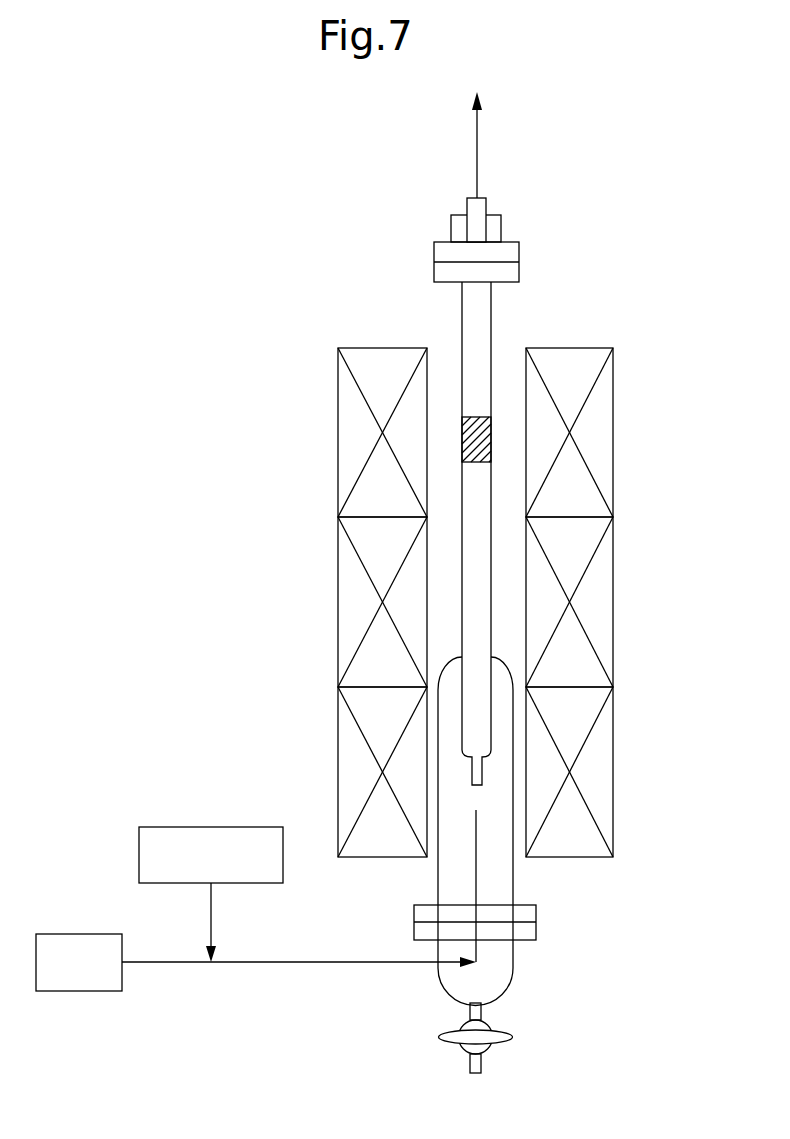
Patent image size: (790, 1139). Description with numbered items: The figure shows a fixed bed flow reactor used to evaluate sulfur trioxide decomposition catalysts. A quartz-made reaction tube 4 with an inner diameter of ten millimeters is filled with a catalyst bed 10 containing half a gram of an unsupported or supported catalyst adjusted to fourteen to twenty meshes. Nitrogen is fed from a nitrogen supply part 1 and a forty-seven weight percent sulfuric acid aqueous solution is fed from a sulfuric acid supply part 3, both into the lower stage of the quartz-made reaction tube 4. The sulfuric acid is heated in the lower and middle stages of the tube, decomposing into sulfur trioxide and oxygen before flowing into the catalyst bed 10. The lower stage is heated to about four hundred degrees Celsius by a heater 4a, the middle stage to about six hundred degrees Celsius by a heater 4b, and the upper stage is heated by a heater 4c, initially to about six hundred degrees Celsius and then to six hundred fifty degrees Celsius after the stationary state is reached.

The nitrogen supply part 1 is at (82, 991).
The sulfuric acid supply part 3 is at (247, 827).
The quartz-made reaction tube 4 is at (356, 262).
The heater 4a is at (600, 777).
The heater 4b is at (600, 604).
The heater 4c is at (600, 437).
The catalyst bed 10 is at (488, 437).